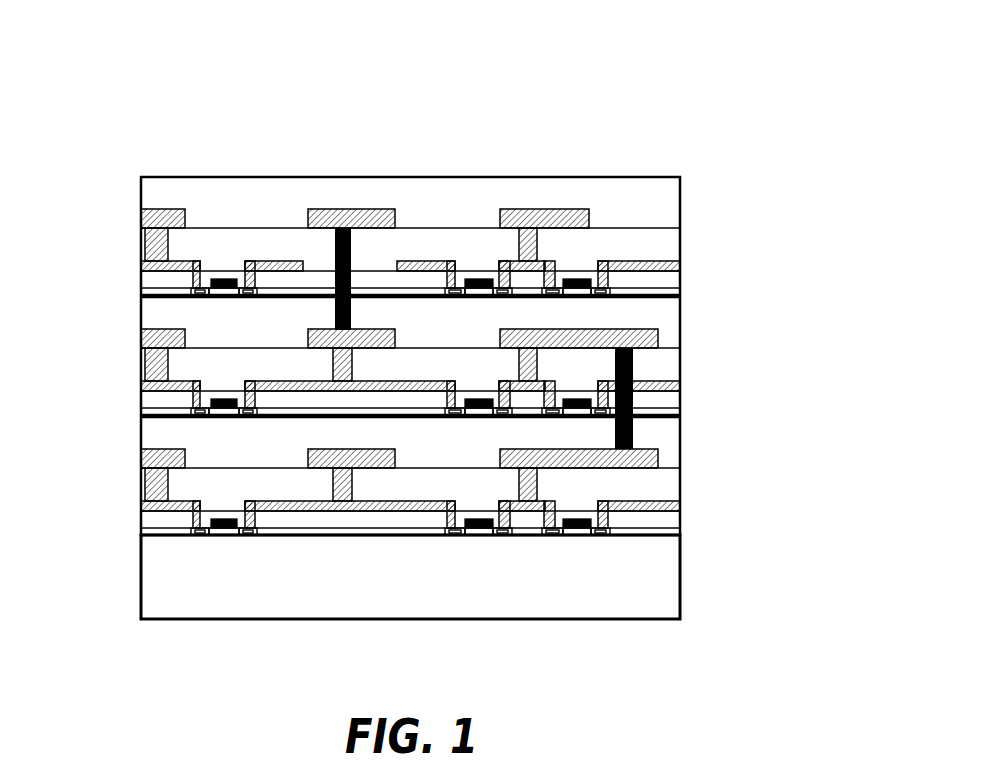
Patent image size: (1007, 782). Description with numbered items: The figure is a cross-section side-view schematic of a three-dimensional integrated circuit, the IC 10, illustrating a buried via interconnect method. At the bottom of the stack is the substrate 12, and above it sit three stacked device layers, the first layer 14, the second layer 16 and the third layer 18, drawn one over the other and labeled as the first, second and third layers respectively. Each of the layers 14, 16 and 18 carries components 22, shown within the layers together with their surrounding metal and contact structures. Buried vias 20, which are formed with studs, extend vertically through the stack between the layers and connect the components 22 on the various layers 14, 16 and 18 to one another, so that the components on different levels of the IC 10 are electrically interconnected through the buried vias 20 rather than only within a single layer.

The 3D IC 10 is at (451, 312).
The substrate 12 is at (410, 577).
The layer 1 14 is at (116, 420).
The layer 2 16 is at (116, 301).
The layer 3 18 is at (116, 182).
The buried vias 20 is at (377, 310).
The components 22 is at (334, 186).